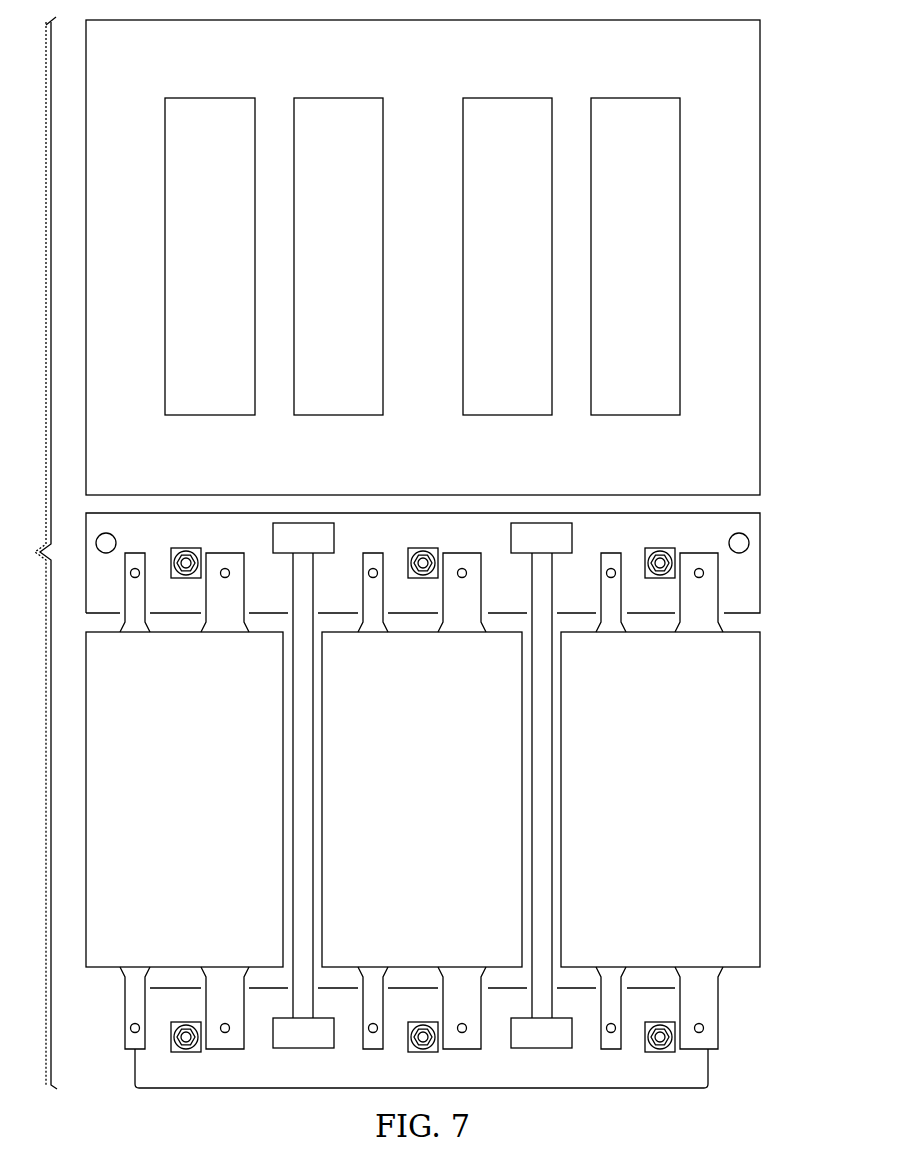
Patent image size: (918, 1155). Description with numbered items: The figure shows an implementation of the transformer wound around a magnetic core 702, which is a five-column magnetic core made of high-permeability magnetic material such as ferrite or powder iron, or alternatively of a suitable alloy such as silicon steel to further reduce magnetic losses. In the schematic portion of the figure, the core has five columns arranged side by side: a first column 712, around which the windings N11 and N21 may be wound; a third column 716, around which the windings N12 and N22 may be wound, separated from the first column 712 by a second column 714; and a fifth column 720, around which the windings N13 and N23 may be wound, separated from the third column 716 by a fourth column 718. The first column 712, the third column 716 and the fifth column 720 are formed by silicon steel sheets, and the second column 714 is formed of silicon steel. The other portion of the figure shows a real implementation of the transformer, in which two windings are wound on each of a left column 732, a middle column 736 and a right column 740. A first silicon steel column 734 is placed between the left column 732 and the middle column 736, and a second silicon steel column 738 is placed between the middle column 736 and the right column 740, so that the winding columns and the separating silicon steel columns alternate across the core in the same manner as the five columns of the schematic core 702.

The magnetic core 702 is at (457, 257).
The first column 712 is at (157, 253).
The second column 714 is at (286, 253).
The third column 716 is at (455, 253).
The fourth column 718 is at (583, 253).
The fifth column 720 is at (752, 253).
The left column 732 is at (203, 812).
The first silicon steel column 734 is at (300, 568).
The middle column 736 is at (442, 812).
The second silicon steel column 738 is at (543, 568).
The right column 740 is at (678, 812).